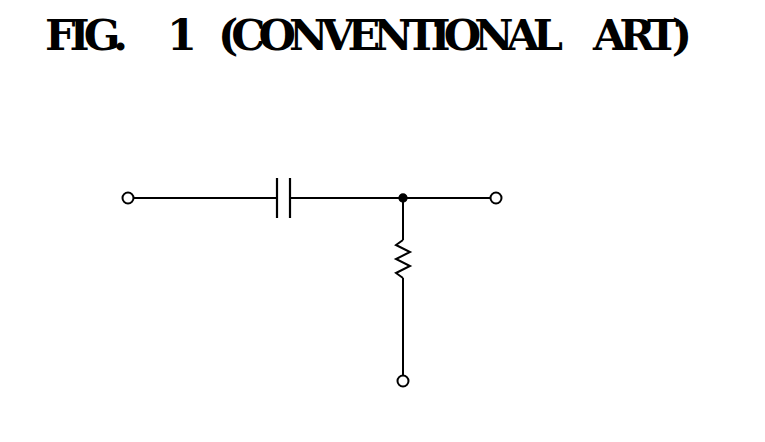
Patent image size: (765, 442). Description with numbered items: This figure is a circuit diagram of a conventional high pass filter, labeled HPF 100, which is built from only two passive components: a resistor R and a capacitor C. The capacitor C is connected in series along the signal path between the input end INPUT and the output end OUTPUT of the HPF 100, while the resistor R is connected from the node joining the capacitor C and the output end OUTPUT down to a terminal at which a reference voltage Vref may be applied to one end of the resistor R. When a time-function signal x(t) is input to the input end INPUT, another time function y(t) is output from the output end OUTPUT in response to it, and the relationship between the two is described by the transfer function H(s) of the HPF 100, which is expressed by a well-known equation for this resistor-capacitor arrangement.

The conventional HPF 100 is at (603, 120).
The capacitor C is at (283, 180).
The resistor R is at (416, 239).
The input end INPUT is at (154, 198).
The output end OUTPUT is at (455, 198).
The reference voltage Vref is at (404, 351).